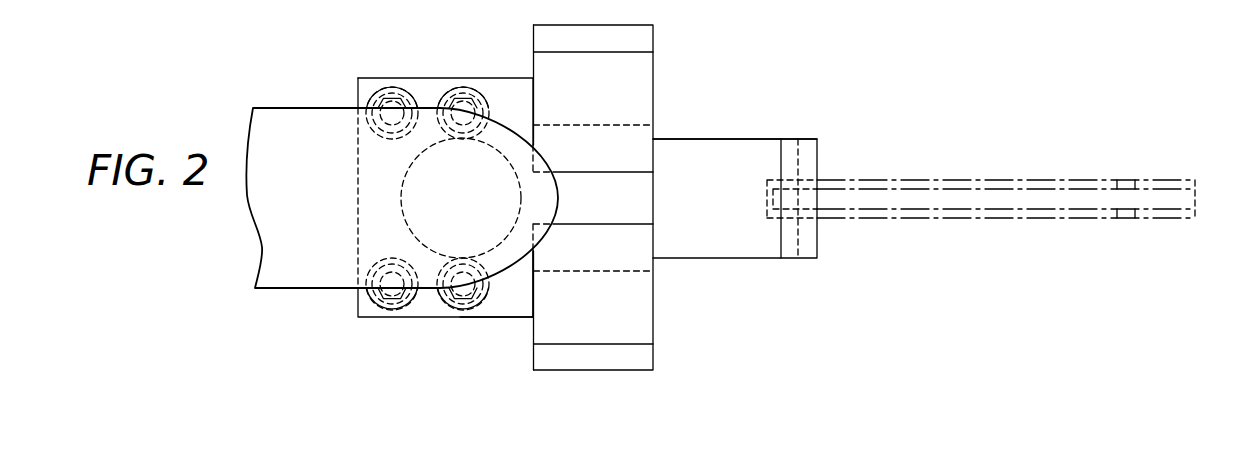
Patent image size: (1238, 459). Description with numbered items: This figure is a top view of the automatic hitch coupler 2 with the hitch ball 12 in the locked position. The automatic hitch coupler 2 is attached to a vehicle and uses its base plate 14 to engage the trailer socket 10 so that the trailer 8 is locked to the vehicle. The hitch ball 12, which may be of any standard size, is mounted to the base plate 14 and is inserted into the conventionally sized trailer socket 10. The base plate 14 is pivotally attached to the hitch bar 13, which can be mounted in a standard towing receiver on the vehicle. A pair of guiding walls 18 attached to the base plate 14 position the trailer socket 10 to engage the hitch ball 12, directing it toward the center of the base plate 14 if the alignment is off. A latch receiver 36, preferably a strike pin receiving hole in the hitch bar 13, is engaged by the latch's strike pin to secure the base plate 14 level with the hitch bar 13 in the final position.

The automatic hitch coupler 2 is at (902, 108).
The trailer 8 is at (292, 166).
The trailer socket 10 is at (372, 244).
The hitch ball 12 is at (450, 201).
The hitch bar 13 is at (706, 220).
The base plate 14 is at (505, 306).
The guiding walls 18 is at (573, 91).
The latch receiver 36 is at (451, 90).